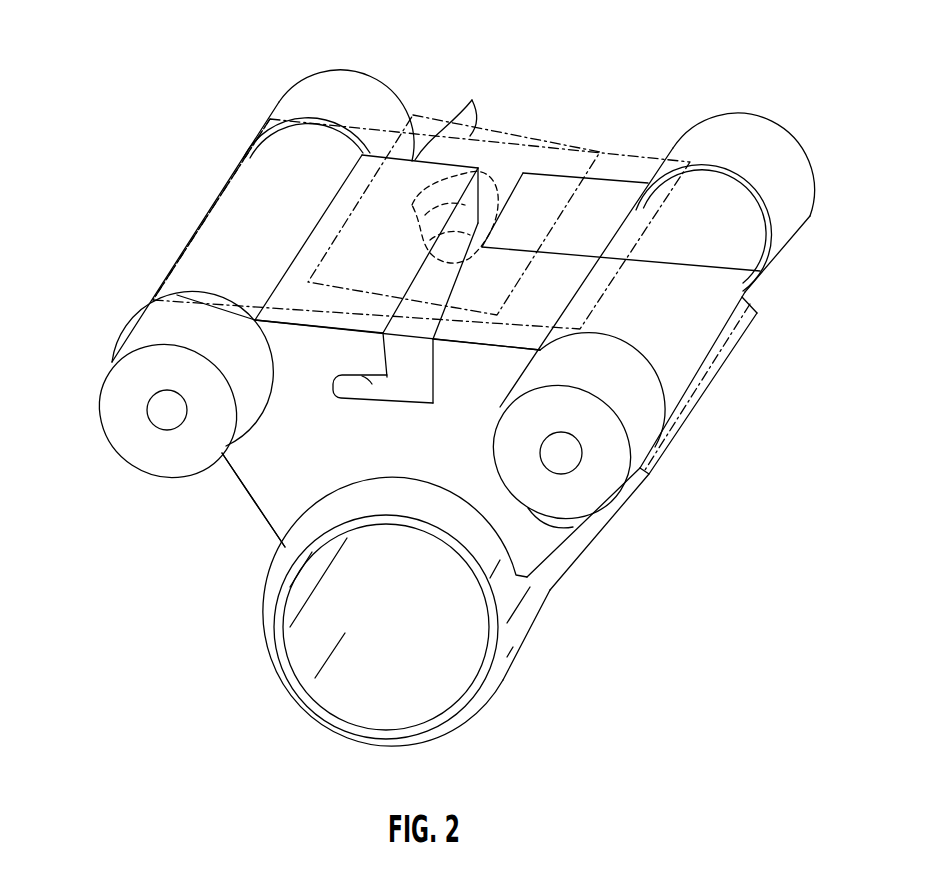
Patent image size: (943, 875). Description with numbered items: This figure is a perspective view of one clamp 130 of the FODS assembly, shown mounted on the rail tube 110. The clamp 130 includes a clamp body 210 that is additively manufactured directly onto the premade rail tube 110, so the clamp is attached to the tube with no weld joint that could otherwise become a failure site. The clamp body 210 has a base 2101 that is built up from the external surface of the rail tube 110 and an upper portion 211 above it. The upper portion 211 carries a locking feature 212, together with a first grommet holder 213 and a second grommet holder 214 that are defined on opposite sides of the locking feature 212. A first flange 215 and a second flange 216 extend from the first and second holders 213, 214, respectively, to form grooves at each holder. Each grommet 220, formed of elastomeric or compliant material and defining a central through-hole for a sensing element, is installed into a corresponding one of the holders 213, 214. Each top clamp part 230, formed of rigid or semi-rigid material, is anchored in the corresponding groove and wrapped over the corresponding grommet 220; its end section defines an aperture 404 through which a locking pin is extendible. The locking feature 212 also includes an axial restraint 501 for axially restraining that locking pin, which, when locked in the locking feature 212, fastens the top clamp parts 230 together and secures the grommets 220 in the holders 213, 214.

The rail tube 110 is at (438, 670).
The clamp 130 is at (263, 527).
The clamp body 210 is at (237, 472).
The base 2101 is at (305, 501).
The upper portion 211 is at (497, 409).
The locking feature 212 is at (370, 382).
The first grommet holder 213 is at (222, 453).
The second grommet holder 214 is at (573, 527).
The first flange 215 is at (222, 197).
The second flange 216 is at (723, 347).
The grommet 220 is at (113, 372).
The top clamp part 230 is at (476, 95).
The aperture 404 is at (487, 207).
The axial restraint 501 is at (760, 271).